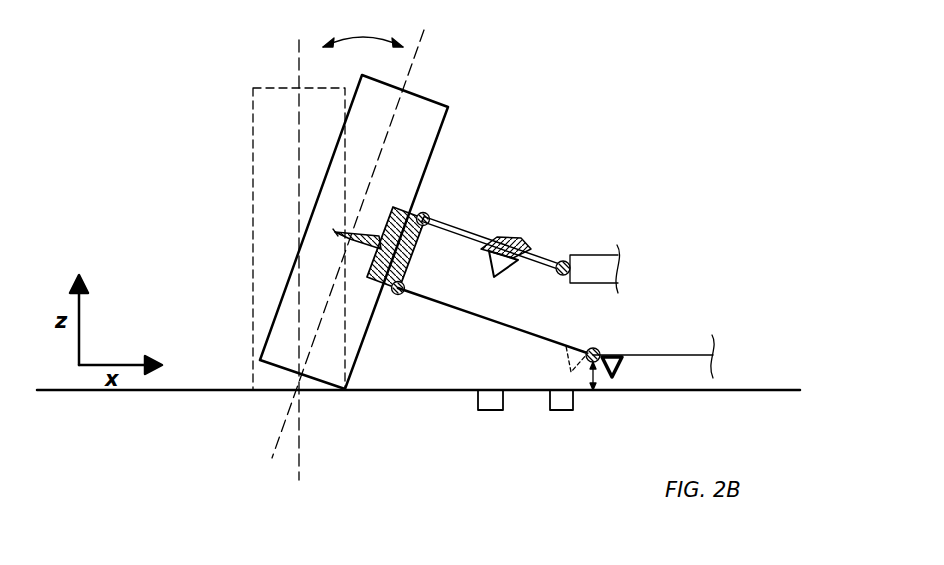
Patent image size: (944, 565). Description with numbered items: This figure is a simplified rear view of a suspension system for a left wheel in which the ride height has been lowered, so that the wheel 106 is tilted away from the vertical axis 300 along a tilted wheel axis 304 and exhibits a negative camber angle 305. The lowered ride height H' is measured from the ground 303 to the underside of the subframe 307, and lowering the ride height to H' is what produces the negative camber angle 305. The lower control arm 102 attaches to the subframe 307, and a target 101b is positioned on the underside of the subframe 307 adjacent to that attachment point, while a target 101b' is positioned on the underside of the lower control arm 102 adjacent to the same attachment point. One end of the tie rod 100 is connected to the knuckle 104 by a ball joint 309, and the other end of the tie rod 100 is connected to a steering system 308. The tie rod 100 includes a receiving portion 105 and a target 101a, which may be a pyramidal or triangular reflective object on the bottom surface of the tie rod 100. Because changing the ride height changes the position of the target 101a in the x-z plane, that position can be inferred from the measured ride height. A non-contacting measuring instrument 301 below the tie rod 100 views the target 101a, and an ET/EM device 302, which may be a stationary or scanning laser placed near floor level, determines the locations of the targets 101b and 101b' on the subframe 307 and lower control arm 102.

The tie rod 100 is at (551, 246).
The target 101a is at (488, 267).
The target 101b is at (642, 391).
The target 101b' is at (533, 357).
The lower control arm 102 is at (471, 322).
The knuckle 104 is at (410, 275).
The receiving portion 105 is at (517, 235).
The wheel 106 is at (362, 350).
The vertical axis 300 is at (299, 246).
The non-contacting measuring instrument 301 is at (478, 403).
The ET/EM device 302 is at (548, 405).
The ground 303 is at (777, 390).
The tilted body axis 304 is at (362, 233).
The camber angle 305 is at (363, 30).
The subframe 307 is at (660, 332).
The steering system 308 is at (597, 255).
The ball joint 309 is at (429, 214).
The ride height H' is at (605, 408).